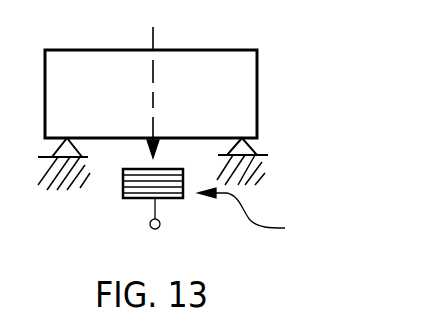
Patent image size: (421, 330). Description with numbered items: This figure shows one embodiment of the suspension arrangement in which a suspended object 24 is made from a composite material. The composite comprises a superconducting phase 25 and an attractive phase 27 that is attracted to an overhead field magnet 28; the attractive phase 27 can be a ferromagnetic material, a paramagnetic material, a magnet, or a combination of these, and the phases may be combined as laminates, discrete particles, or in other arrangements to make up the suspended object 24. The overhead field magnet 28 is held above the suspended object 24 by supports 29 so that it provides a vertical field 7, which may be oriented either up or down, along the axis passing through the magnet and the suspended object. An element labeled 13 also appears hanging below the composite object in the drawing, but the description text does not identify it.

The vertical field 7 is at (153, 38).
The workpiece 13 is at (164, 223).
The suspended object 24 is at (254, 213).
The superconducting phase 25 is at (122, 188).
The attractive phase 27 is at (122, 196).
The overhead field magnet 28 is at (257, 87).
The supports 29 is at (252, 146).